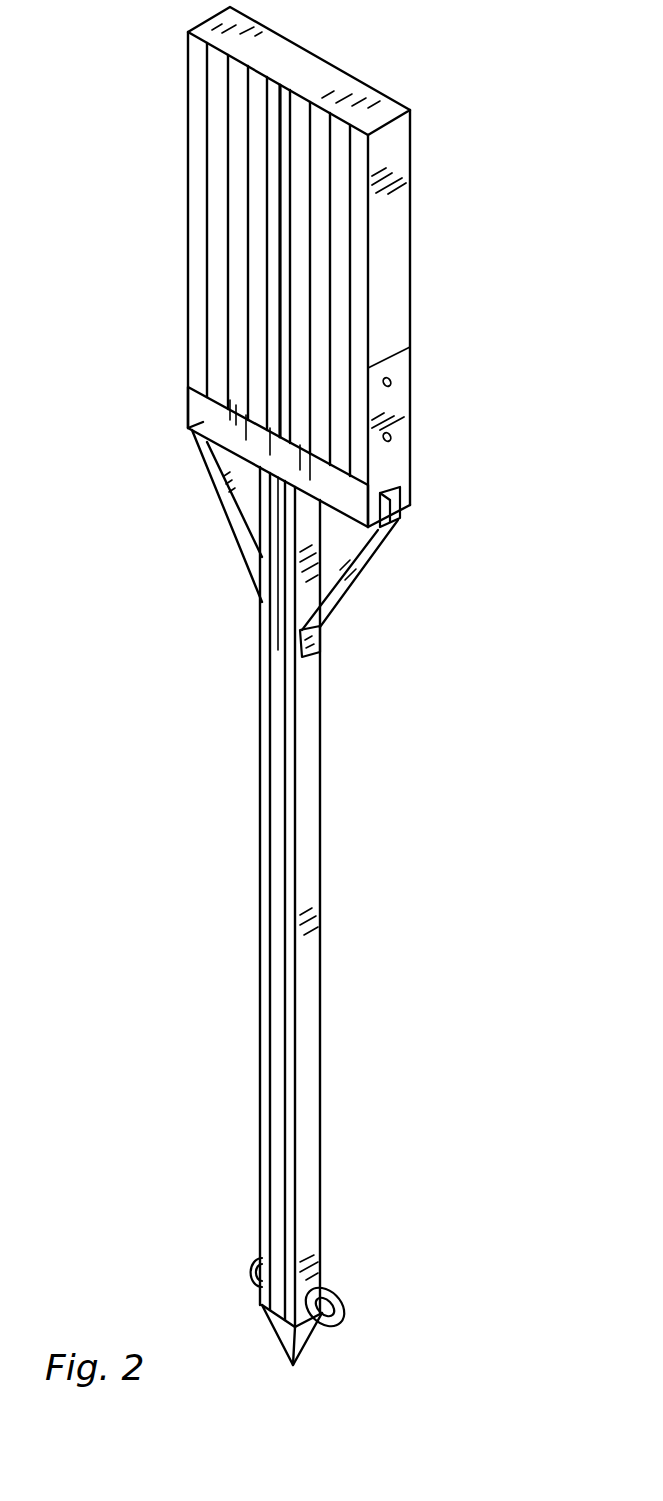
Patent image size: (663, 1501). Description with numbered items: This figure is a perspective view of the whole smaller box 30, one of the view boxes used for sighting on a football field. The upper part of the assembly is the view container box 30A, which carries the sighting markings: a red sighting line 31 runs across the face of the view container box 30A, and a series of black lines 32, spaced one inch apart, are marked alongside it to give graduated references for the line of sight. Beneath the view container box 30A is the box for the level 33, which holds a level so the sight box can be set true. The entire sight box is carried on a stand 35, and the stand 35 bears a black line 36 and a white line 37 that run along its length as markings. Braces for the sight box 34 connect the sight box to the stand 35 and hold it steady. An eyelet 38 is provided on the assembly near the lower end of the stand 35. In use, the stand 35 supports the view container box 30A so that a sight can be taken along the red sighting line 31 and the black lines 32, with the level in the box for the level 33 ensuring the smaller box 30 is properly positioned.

The smaller box 30 is at (352, 62).
The view container box 30A is at (207, 22).
The red sighting line 31 is at (280, 215).
The black lines 32 is at (313, 293).
The box for the level 33 is at (188, 428).
The braces for the sight box 34 is at (393, 460).
The stand 35 is at (260, 827).
The black line on the stand 36 is at (263, 742).
The white line 37 is at (278, 761).
The eyelet 38 is at (343, 1298).